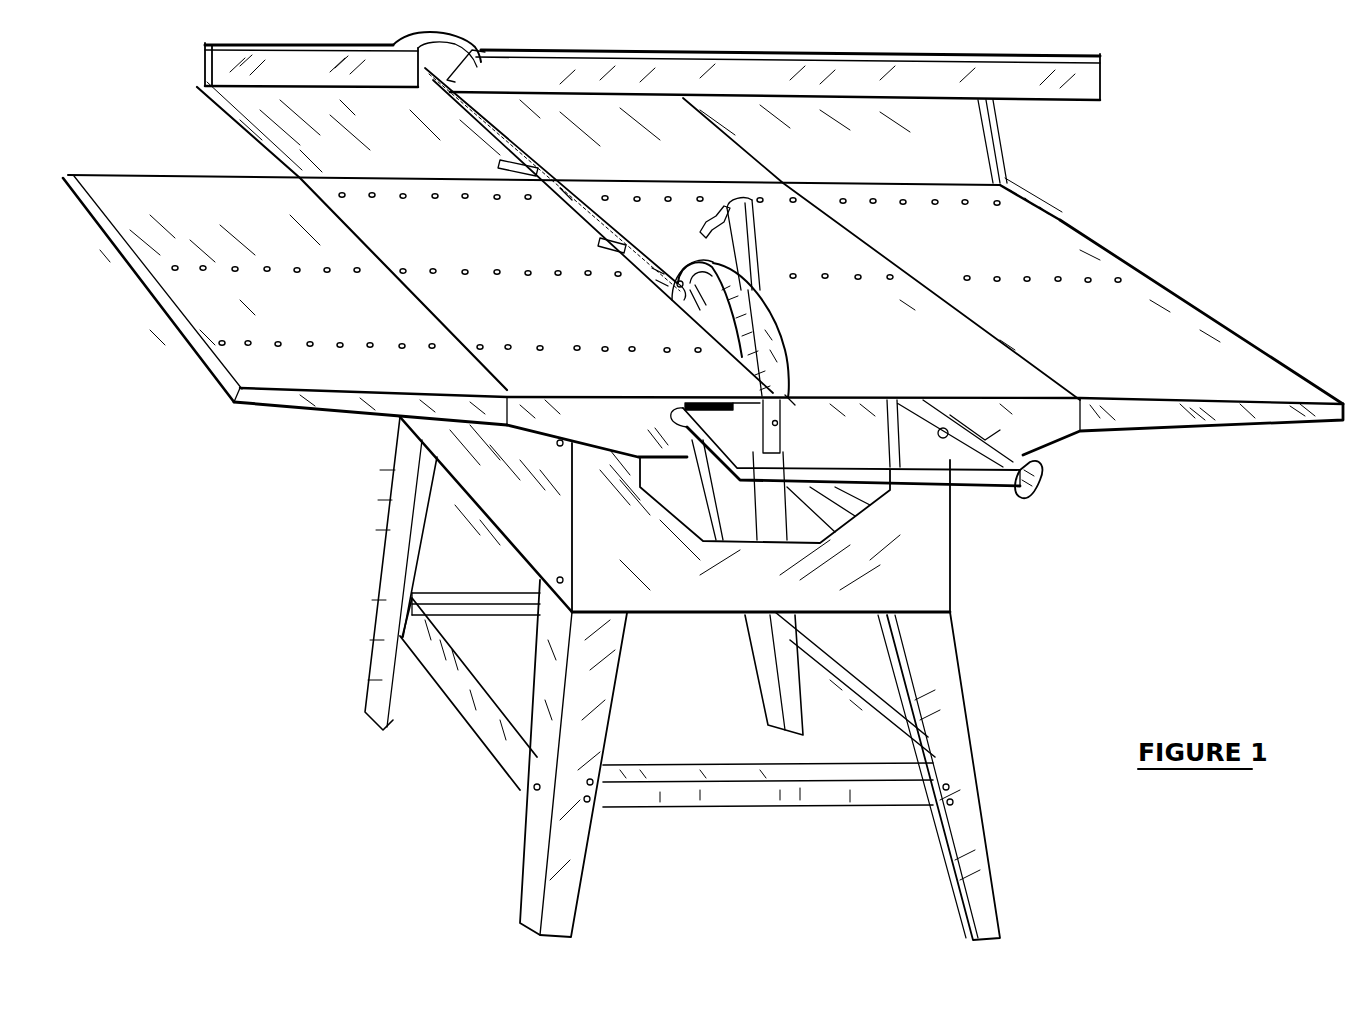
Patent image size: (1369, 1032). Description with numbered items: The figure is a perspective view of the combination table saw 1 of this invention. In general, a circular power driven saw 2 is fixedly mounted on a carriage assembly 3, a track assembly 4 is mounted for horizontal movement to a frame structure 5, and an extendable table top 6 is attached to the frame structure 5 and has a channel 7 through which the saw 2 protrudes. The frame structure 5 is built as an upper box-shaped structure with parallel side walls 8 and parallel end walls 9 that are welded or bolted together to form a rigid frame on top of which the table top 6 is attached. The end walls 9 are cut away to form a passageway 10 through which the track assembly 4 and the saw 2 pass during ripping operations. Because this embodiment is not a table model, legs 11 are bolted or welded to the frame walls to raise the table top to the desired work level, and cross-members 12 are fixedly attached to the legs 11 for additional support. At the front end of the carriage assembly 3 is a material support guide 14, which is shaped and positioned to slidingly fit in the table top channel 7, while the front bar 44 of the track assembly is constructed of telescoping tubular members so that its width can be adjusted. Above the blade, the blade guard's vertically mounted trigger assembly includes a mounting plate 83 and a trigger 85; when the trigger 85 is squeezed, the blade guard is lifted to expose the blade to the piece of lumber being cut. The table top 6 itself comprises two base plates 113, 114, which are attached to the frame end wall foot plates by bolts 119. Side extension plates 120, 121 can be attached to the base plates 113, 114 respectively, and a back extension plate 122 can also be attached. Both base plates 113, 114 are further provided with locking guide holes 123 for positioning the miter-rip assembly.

The table saw 1 is at (313, 500).
The circular power driven saw 2 is at (670, 262).
The carriage assembly 3 is at (793, 423).
The track assembly 4 is at (1043, 477).
The frame structure 5 is at (711, 678).
The extendable table top 6 is at (810, 213).
The channel 7 is at (567, 200).
The side walls 8 is at (527, 520).
The end walls 9 is at (693, 597).
The passageway 10 is at (686, 501).
The legs 11 is at (960, 727).
The cross-members 12 is at (683, 770).
The material support guide 14 is at (643, 265).
The front bar 44 is at (513, 160).
The mounting plate 83 is at (783, 342).
The trigger 85 is at (712, 220).
The base plate 113 is at (360, 187).
The base plate 114 is at (653, 195).
The bolts 119 is at (357, 222).
The side extension plate 120 is at (140, 188).
The side extension plate 121 is at (1027, 220).
The back extension plate 122 is at (738, 162).
The locking guide holes 123 is at (600, 350).